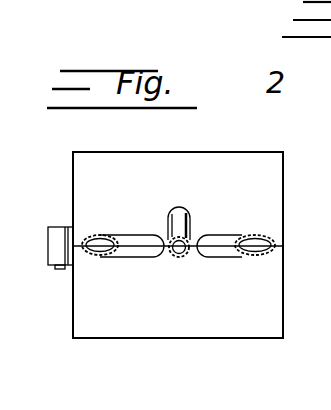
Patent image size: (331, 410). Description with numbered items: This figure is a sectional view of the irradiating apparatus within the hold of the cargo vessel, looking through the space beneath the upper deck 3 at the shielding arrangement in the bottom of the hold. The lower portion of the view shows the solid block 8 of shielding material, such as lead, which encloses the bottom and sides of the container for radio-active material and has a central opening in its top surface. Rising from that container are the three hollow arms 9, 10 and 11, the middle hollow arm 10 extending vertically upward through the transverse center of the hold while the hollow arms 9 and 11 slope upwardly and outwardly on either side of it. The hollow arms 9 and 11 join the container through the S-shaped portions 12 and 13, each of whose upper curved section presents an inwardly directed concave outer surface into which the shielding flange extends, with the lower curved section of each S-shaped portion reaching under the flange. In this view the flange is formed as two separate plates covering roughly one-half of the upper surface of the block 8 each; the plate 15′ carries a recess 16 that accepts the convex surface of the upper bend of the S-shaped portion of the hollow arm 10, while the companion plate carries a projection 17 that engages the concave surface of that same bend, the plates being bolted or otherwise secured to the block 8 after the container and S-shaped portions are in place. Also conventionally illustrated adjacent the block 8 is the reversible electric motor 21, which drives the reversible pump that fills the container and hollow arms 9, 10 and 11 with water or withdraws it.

The upper deck 3 is at (160, 136).
The block 8 is at (198, 237).
The hollow arm 9 is at (101, 235).
The hollow arm 10 is at (178, 258).
The hollow arm 11 is at (272, 234).
The S-shaped portion 12 is at (158, 234).
The S-shaped portion 13 is at (214, 220).
The plate 15′ is at (140, 194).
The recess 16 is at (177, 206).
The projection 17 is at (182, 257).
The reversible electric motor 21 is at (60, 222).